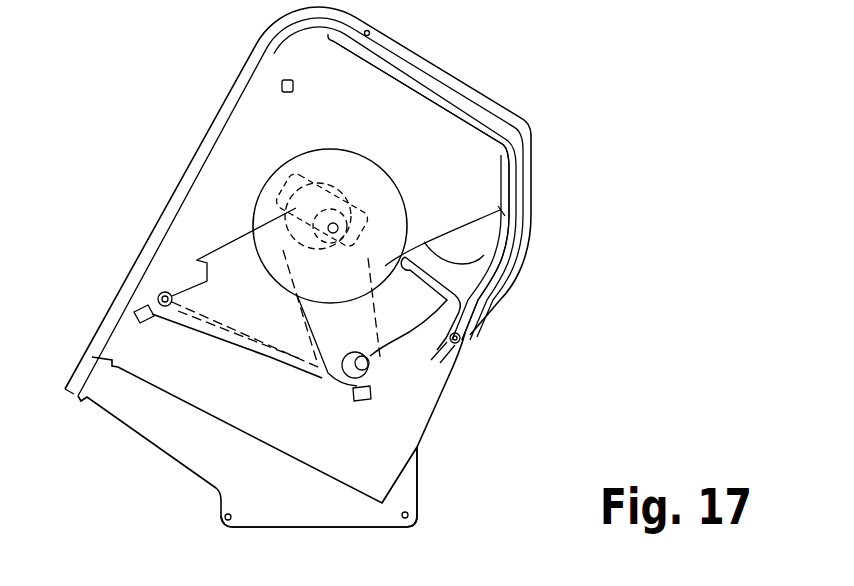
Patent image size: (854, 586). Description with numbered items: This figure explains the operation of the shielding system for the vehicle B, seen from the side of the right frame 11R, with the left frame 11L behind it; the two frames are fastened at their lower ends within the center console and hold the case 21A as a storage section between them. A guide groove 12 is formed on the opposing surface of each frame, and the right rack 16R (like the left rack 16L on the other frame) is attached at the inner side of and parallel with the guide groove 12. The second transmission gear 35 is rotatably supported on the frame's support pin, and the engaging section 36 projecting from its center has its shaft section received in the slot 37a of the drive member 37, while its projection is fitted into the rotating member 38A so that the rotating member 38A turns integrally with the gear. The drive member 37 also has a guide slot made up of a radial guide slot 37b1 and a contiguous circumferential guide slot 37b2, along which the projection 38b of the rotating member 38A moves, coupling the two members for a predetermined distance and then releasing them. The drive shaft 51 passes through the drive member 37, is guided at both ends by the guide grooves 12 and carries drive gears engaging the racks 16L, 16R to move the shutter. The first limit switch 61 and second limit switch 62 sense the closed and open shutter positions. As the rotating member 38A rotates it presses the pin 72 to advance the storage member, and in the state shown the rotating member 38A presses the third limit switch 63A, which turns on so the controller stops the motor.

The left frame 11L is at (207, 437).
The right frame 11R is at (319, 487).
The guide groove 12 is at (203, 152).
The left rack 16L is at (432, 100).
The right rack 16R is at (421, 190).
The case 21A is at (370, 483).
The second transmission gear 35 is at (283, 171).
The engaging section 36 is at (334, 221).
The drive member 37 is at (477, 268).
The slot 37a is at (301, 196).
The radial guide slot 37b1 is at (500, 210).
The circumferential guide slot 37b2 is at (415, 350).
The rotating member 38A is at (265, 305).
The projection 38b is at (381, 360).
The drive shaft 51 is at (463, 340).
The first limit switch 61 is at (283, 82).
The second limit switch 62 is at (357, 402).
The third limit switch 63A is at (140, 308).
The pin 72 is at (163, 292).
The vehicle B is at (439, 518).